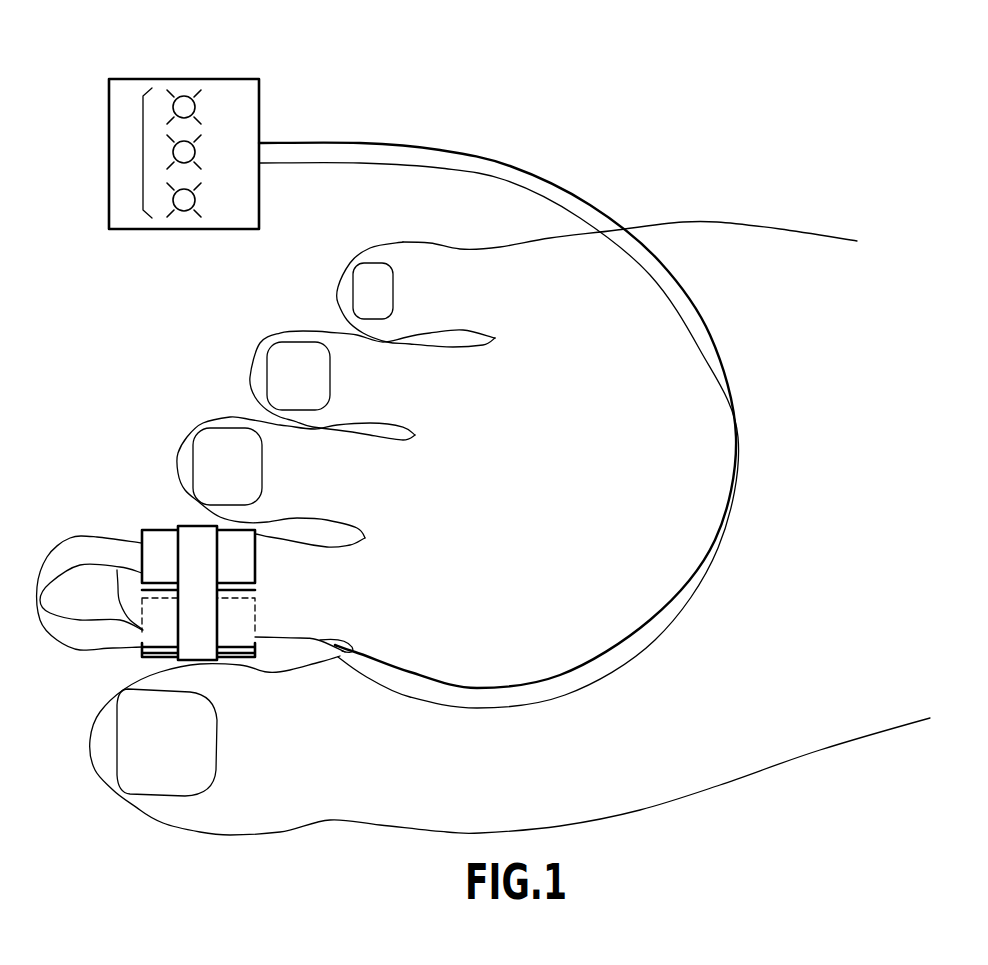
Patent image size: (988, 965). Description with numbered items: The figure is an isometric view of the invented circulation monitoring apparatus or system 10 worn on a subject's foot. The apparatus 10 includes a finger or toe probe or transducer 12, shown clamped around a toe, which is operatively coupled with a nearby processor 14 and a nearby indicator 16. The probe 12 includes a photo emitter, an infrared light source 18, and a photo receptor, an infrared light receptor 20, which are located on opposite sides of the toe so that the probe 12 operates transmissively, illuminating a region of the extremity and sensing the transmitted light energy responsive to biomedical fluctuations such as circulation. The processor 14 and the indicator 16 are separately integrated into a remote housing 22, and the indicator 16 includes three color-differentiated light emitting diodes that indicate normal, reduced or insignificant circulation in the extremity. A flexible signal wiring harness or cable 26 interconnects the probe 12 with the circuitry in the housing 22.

The apparatus or system 10 is at (660, 76).
The probe or transducer 12 is at (138, 510).
The processor 14 is at (240, 96).
The indicator 16 is at (143, 150).
The infrared light source 18 is at (257, 566).
The infrared light receptor 20 is at (160, 657).
The remote housing 22 is at (185, 78).
The cable 26 is at (510, 165).